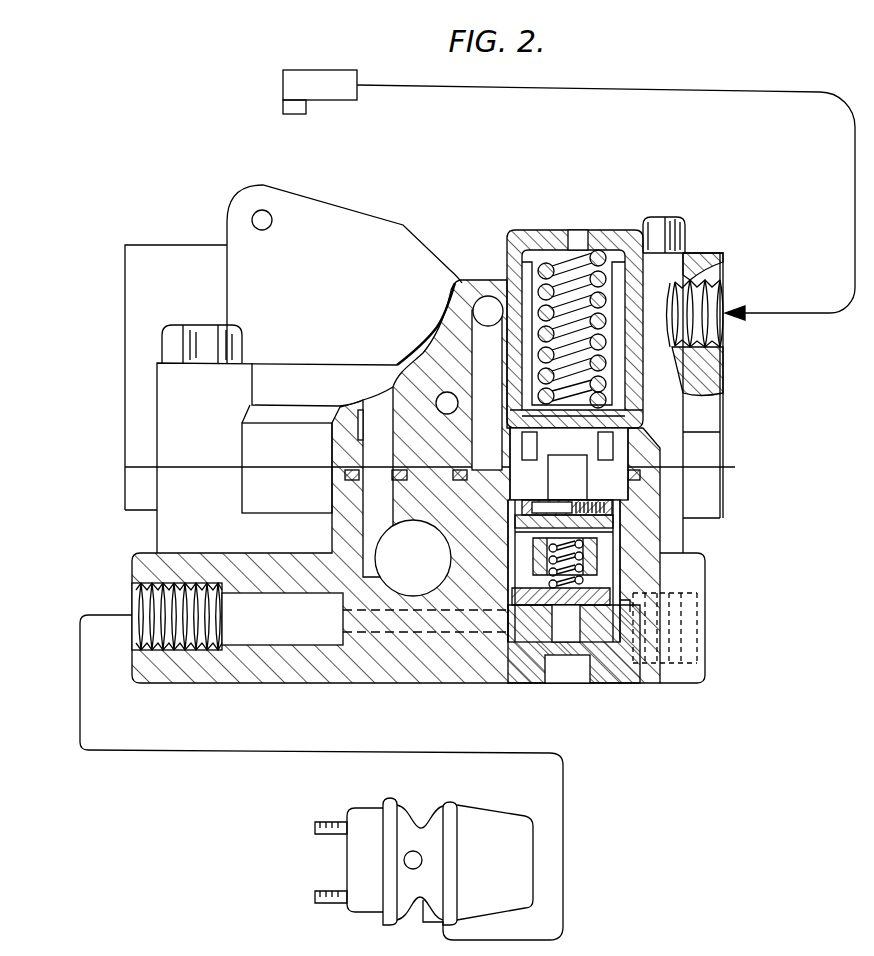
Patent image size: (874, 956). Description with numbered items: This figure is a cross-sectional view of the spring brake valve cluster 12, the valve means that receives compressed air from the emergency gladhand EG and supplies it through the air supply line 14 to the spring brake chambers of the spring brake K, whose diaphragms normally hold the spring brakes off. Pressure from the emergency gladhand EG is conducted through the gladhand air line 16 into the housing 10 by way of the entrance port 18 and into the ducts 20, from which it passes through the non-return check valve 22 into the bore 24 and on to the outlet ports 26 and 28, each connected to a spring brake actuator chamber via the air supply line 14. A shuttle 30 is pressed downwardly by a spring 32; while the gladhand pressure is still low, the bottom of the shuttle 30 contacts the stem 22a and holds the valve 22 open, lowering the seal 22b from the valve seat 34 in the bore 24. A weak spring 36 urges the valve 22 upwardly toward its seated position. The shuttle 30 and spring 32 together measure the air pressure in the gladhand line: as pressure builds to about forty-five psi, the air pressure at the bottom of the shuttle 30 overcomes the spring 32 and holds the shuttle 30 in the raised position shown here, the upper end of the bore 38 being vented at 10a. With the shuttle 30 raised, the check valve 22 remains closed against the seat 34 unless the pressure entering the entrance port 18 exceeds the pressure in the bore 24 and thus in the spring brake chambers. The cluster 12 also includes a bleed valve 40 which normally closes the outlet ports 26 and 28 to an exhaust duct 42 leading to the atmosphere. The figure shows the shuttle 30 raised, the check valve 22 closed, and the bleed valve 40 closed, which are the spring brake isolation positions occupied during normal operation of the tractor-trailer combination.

The emergency gladhand EG is at (283, 86).
The gladhand air line 16 is at (527, 91).
The housing 10 is at (447, 292).
The spring brake valve cluster 12 is at (502, 236).
The ducts 20 is at (472, 345).
The vent 10a is at (576, 250).
The spring 32 is at (586, 270).
The entrance port 18 is at (716, 305).
The bore 38 is at (628, 446).
The shuttle 30 is at (640, 406).
The stem 22a is at (700, 468).
The non-return check valve 22 is at (640, 512).
The valve seat 34 is at (524, 503).
The seal 22b is at (515, 523).
The bleed valve 40 is at (535, 580).
The weak spring 36 is at (598, 550).
The bore 24 is at (605, 578).
The outlet port 26 is at (697, 632).
The exhaust duct 42 is at (582, 680).
The outlet port 28 is at (145, 600).
The air supply line 14 is at (293, 751).
The spring brake K is at (500, 822).